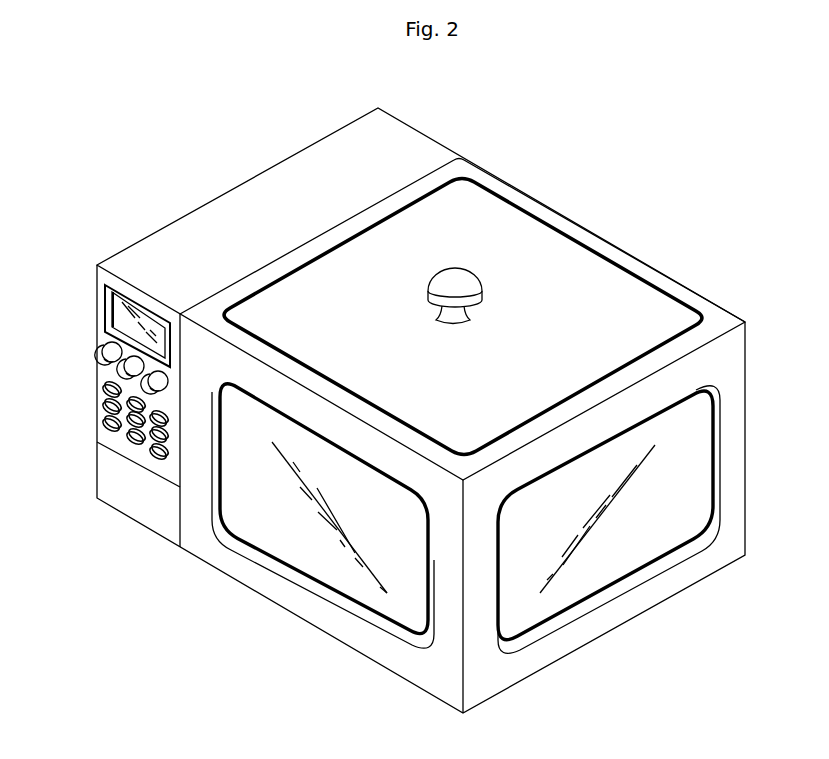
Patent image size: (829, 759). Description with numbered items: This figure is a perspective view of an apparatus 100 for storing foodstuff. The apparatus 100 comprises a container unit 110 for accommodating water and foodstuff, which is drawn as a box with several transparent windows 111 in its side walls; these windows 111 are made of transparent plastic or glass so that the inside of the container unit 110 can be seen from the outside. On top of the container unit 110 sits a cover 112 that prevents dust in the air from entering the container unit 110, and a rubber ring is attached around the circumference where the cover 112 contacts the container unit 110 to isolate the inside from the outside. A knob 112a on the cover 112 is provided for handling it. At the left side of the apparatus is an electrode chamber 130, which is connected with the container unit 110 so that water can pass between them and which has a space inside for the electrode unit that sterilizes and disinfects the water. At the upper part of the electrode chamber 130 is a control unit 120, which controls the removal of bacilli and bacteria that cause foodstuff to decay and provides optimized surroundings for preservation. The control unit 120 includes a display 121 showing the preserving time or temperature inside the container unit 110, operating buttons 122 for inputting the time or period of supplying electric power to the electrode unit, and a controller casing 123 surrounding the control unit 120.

The apparatus for storing foodstuff 100 is at (200, 134).
The container unit 110 is at (703, 292).
The transparent windows 111 is at (602, 577).
The cover 112 is at (593, 267).
The knob 112a is at (457, 279).
The control unit 120 is at (108, 313).
The display 121 is at (108, 298).
The operating button 122 is at (104, 396).
The controller casing 123 is at (104, 339).
The electrode chamber 130 is at (117, 488).